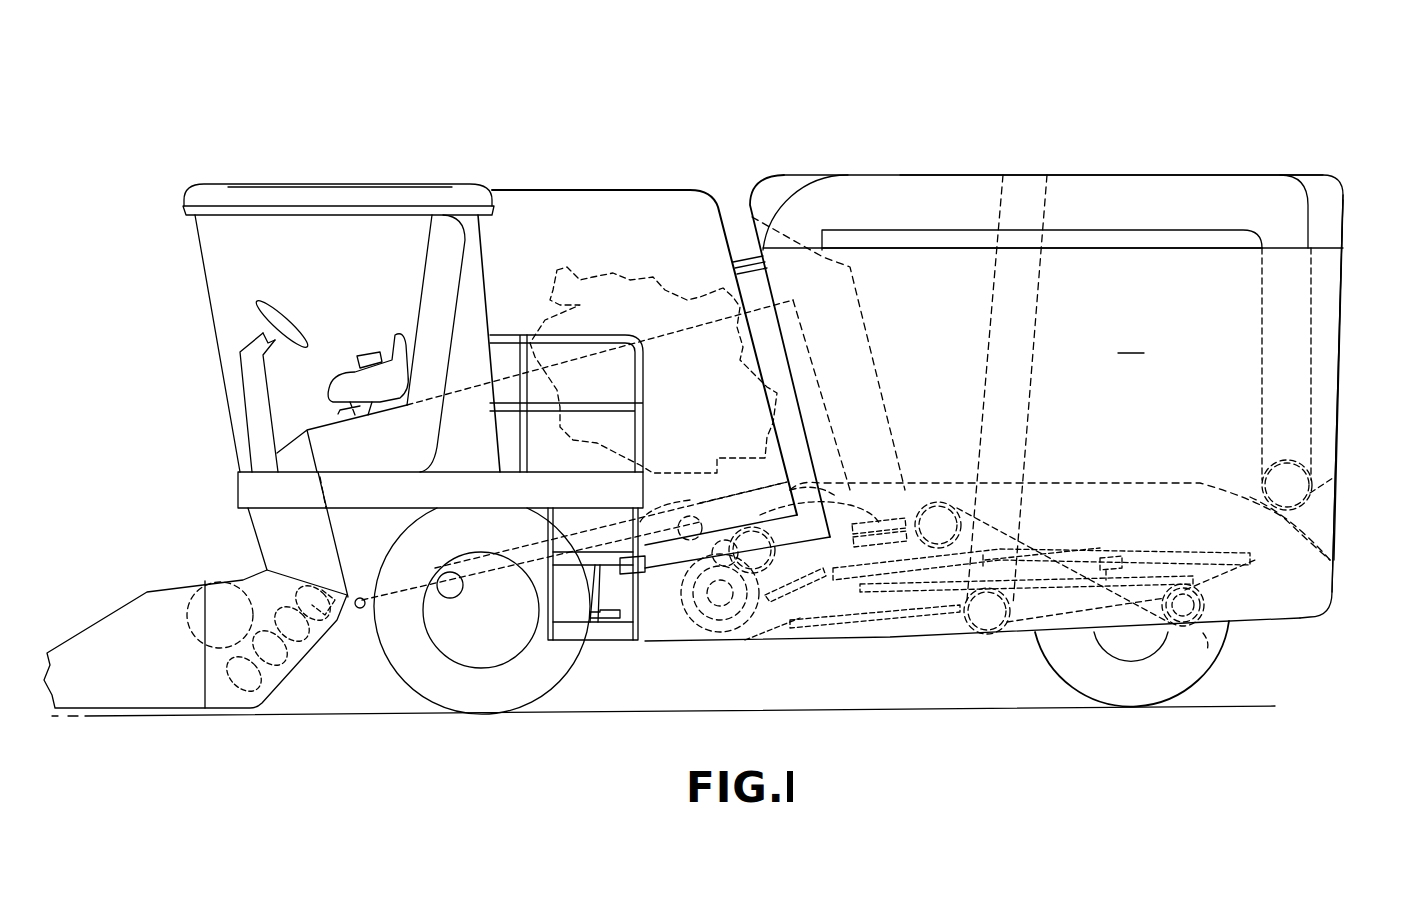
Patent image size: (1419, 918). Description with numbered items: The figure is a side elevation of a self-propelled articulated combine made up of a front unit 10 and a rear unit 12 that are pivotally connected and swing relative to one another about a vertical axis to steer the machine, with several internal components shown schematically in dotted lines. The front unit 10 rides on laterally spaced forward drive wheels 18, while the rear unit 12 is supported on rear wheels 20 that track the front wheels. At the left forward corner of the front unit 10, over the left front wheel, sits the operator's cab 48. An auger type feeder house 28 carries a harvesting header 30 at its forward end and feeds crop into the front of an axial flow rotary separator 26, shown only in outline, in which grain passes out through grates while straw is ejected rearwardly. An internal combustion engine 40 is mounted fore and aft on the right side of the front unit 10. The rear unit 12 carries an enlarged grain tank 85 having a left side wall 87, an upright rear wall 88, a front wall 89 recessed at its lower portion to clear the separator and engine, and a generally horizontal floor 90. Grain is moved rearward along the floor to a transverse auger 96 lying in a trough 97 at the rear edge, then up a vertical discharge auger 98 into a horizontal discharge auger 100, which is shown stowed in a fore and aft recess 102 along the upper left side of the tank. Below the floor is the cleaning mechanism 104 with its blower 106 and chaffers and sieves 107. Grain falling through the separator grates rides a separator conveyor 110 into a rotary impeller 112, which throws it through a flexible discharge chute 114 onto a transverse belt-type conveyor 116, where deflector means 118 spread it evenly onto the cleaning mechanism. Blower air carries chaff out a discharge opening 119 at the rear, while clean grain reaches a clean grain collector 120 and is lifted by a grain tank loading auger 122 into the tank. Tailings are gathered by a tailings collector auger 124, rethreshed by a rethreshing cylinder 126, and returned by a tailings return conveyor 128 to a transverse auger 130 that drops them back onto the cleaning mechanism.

The front unit 10 is at (566, 162).
The rear unit 12 is at (1128, 152).
The forward drive wheels 18 is at (562, 672).
The rear wheels 20 is at (1206, 670).
The separator 26 is at (484, 385).
The feeder house 28 is at (306, 662).
The harvesting header 30 is at (122, 602).
The internal combustion engine 40 is at (650, 260).
The operator's station or cab 48 is at (448, 165).
The grain tank 85 is at (1335, 152).
The left side wall 87 is at (1131, 341).
The rear wall 88 is at (1340, 326).
The front wall 89 is at (875, 338).
The floor 90 is at (1090, 483).
The transverse auger 96 is at (1305, 460).
The trough 97 is at (1255, 495).
The vertical discharge auger 98 is at (1312, 305).
The horizontal discharge auger 100 is at (943, 175).
The fore and aft recess 102 is at (915, 248).
The cleaning mechanism 104 is at (838, 627).
The blower 106 is at (705, 638).
The chaffers and sieves 107 is at (1118, 548).
The separator conveyor 110 is at (640, 518).
The rotary impeller 112 is at (765, 494).
The discharge chute 114 is at (838, 484).
The transverse belt-type conveyor 116 is at (892, 506).
The deflector means 118 is at (879, 514).
The discharge opening 119 is at (1290, 565).
The clean grain collector 120 is at (987, 636).
The grain tank loading auger 122 is at (1035, 285).
The tailings collector auger 124 is at (1205, 606).
The rethreshing cylinder 126 is at (1206, 630).
The tailings return conveyor 128 is at (1040, 535).
The transverse auger 130 is at (960, 506).